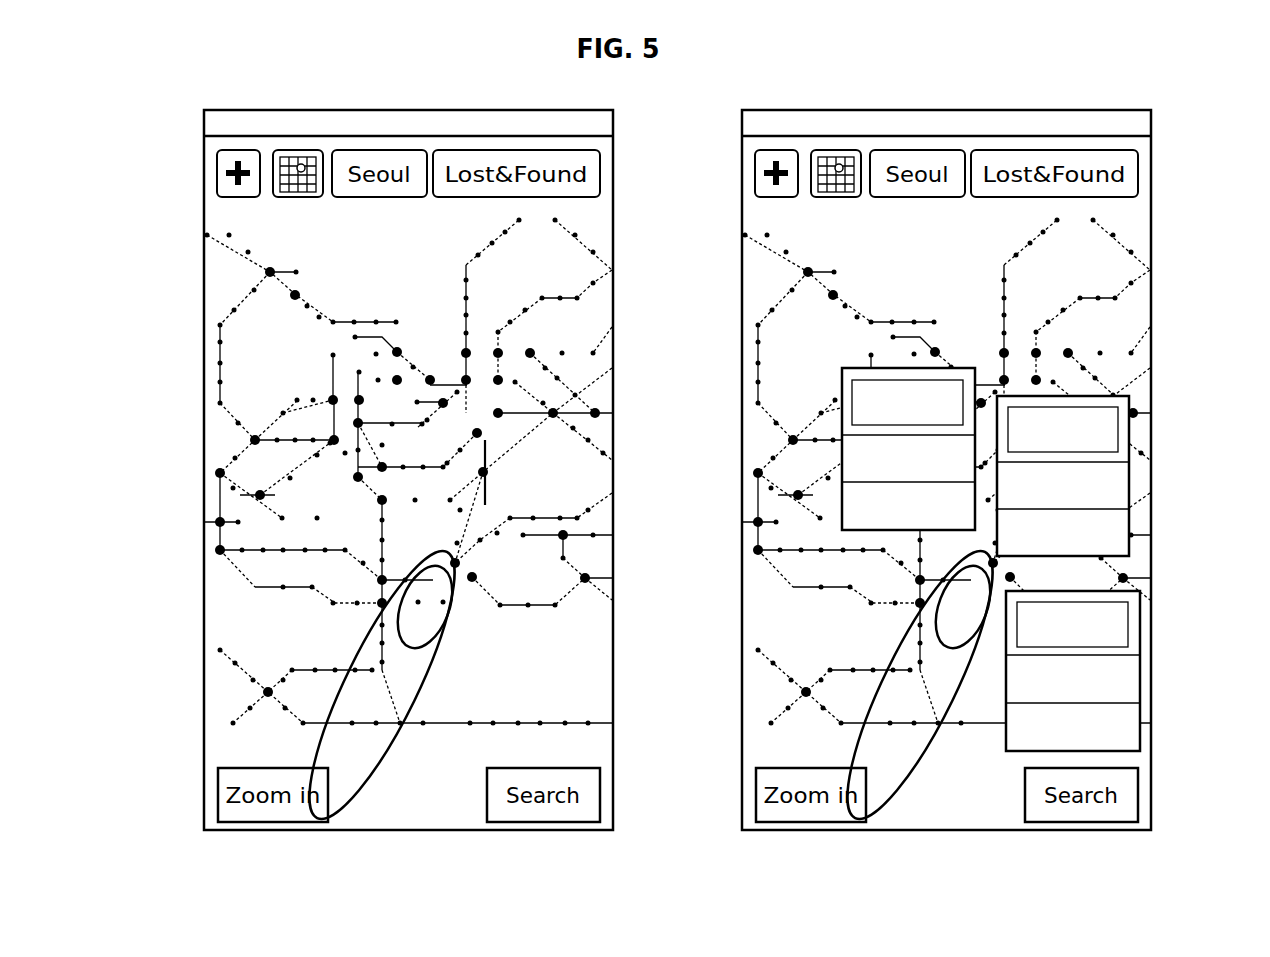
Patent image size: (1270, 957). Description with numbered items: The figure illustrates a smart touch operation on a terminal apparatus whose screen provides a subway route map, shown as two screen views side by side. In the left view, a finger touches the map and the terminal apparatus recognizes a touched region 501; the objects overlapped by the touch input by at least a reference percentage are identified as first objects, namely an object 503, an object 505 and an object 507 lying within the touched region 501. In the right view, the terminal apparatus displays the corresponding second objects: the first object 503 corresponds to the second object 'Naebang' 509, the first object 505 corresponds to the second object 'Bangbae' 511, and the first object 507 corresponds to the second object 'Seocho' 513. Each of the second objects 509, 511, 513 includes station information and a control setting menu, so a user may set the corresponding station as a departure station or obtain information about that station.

The touched region 501 is at (417, 603).
The first object 503 is at (430, 577).
The first object 505 is at (400, 618).
The first object 507 is at (443, 602).
The second object 'Naebang' 509 is at (963, 368).
The second object 'Bangbae' 511 is at (1130, 482).
The second object 'Seocho' 513 is at (1142, 677).